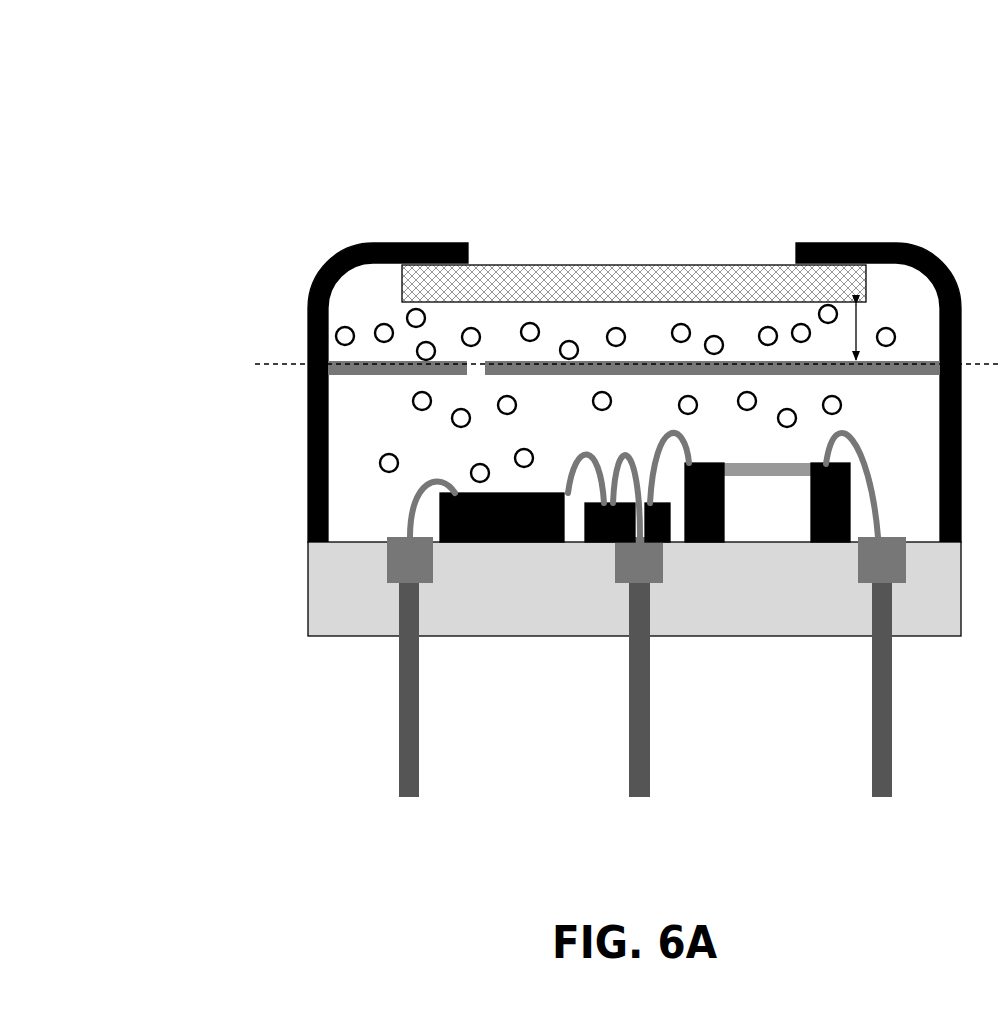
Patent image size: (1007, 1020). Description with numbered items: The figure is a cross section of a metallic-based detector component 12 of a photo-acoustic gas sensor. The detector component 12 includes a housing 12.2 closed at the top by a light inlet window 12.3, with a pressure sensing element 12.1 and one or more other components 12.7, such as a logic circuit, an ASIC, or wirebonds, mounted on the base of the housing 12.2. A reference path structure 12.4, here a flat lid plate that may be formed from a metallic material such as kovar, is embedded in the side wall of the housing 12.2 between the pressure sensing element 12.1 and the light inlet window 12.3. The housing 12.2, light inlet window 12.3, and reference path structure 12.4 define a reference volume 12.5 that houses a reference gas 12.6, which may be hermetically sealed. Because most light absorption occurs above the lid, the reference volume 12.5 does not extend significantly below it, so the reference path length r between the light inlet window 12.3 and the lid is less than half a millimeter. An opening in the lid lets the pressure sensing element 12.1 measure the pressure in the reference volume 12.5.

The detector component 12 is at (122, 64).
The pressure sensing element 12.1 is at (767, 502).
The housing 12.2 is at (309, 475).
The light inlet window 12.3 is at (634, 283).
The reference path structure 12.4 is at (553, 376).
The reference volume 12.5 is at (733, 333).
The reference gas 12.6 is at (530, 332).
The other components 12.7 is at (588, 543).